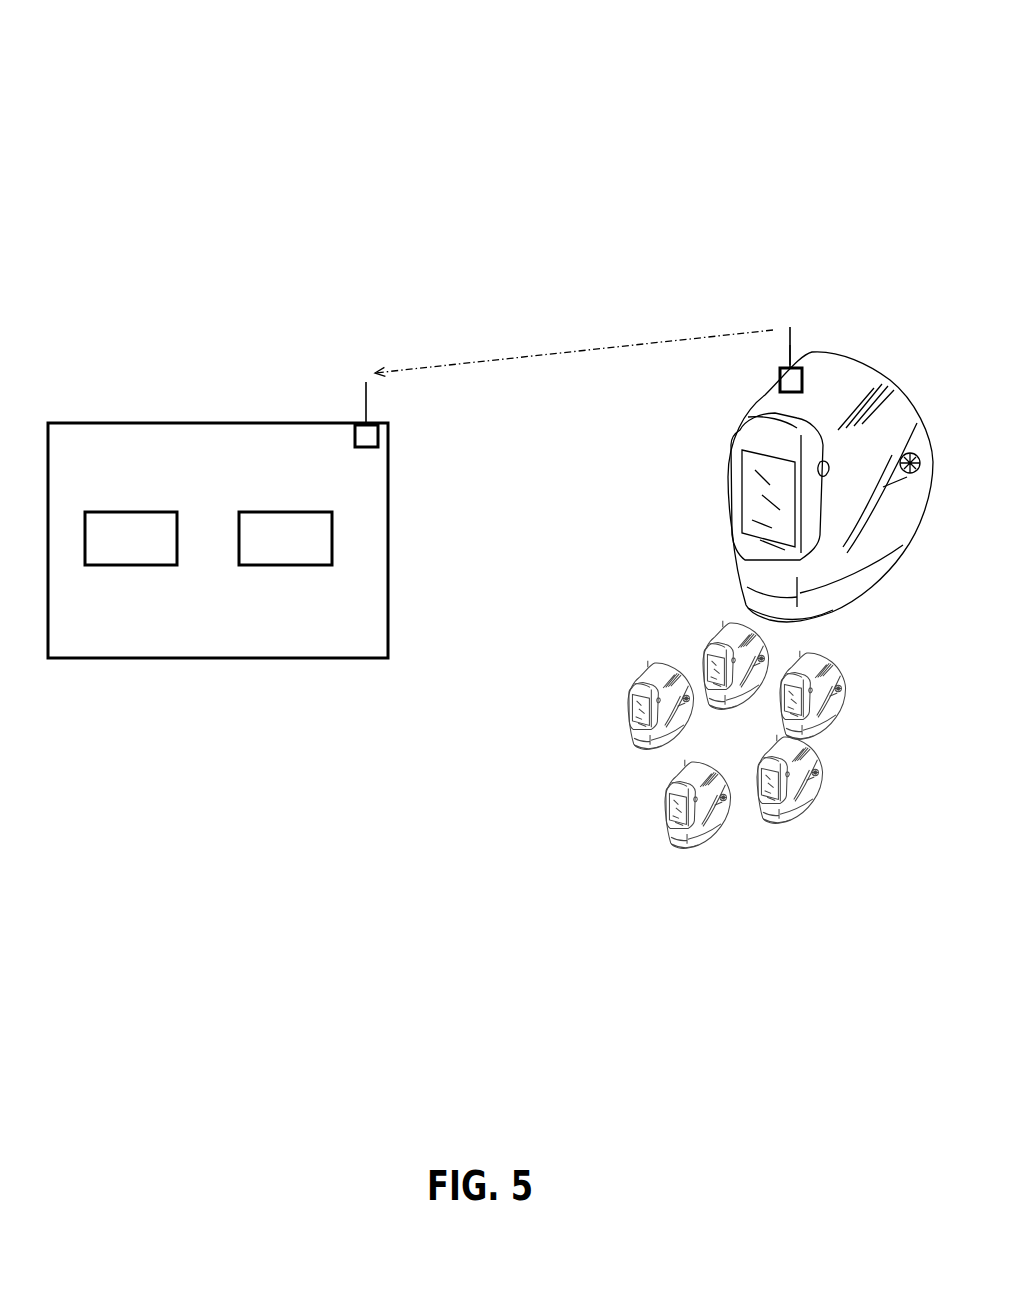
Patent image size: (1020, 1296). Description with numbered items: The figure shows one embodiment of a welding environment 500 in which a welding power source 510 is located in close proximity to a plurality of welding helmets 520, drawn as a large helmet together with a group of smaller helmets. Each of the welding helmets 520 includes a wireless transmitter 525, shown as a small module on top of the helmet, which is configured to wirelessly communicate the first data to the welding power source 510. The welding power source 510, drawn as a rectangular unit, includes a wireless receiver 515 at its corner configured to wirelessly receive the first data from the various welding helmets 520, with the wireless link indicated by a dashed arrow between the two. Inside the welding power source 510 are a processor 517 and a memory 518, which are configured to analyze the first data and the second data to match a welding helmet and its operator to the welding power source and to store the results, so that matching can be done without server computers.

The welding environment 500 is at (127, 108).
The welding power source 510 is at (100, 423).
The wireless receiver 515 is at (380, 445).
The processor 517 is at (153, 512).
The memory 518 is at (285, 512).
The welding helmets 520 is at (592, 682).
The wireless transmitter 525 is at (802, 372).